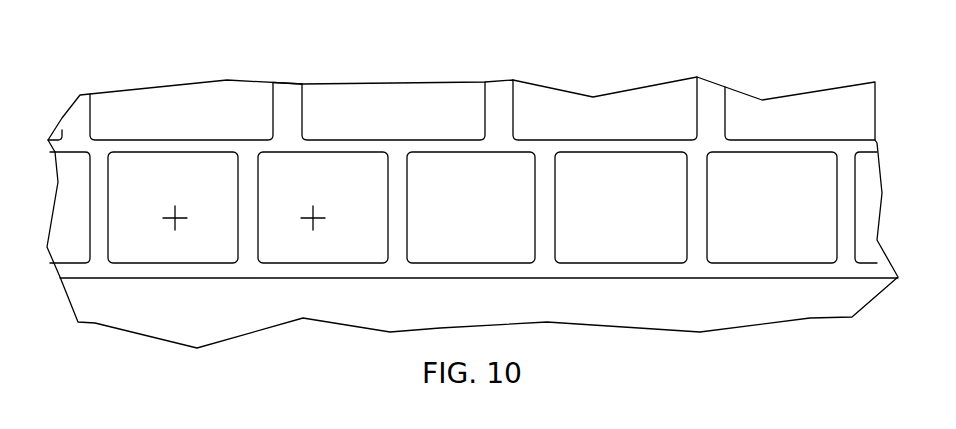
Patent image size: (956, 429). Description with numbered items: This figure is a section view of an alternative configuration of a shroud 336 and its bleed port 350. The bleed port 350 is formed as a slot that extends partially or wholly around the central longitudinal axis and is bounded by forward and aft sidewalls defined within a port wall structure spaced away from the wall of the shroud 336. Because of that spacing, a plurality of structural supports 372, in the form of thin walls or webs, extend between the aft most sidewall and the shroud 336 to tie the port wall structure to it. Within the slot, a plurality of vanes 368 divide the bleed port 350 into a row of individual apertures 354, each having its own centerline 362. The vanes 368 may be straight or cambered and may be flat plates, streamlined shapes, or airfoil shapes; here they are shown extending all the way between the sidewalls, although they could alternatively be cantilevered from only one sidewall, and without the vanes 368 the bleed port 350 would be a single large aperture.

The bleed port 350 is at (551, 97).
The shroud 336 is at (463, 120).
The structural supports 372 is at (292, 95).
The individual apertures 354 is at (160, 258).
The centerline 362 is at (316, 210).
The vanes 368 is at (402, 237).